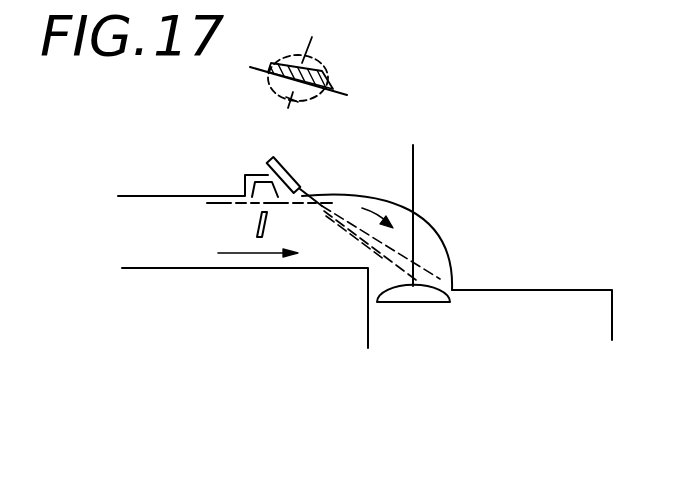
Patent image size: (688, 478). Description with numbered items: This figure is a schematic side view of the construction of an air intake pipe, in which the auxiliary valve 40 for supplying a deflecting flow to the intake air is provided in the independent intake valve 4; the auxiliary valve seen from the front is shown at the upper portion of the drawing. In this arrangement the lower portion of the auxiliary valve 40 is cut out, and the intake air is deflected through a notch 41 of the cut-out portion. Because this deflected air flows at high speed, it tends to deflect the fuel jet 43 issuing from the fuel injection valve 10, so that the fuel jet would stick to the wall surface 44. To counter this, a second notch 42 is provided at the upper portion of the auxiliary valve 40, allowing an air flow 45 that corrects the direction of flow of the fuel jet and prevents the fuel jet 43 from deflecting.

The independent intake valve 4 is at (188, 255).
The fuel injection valve 10 is at (280, 160).
The auxiliary valve 40 is at (327, 80).
The notch 41 is at (312, 100).
The notch 42 is at (312, 64).
The fuel jet 43 is at (387, 260).
The wall surface 44 is at (423, 217).
The air flow 45 is at (365, 195).